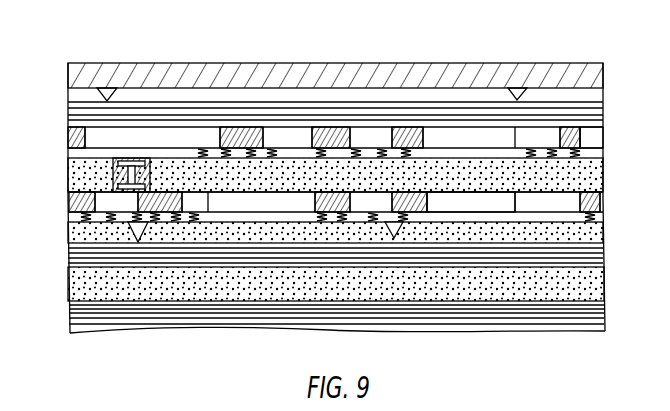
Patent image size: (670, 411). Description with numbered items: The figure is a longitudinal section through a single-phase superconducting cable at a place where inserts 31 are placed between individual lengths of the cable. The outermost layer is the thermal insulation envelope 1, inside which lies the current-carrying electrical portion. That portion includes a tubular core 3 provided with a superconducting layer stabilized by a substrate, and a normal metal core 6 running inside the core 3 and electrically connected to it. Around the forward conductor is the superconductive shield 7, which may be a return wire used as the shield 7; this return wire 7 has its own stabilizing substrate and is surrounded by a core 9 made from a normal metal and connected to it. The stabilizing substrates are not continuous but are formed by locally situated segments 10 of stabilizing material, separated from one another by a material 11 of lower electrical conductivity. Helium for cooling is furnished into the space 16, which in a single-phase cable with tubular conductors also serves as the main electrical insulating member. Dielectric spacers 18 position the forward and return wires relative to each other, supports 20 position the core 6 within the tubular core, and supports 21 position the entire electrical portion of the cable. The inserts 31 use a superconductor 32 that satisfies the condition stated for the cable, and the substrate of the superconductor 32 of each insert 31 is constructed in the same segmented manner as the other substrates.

The thermal insulation envelope 1 is at (92, 72).
The core 3 is at (218, 216).
The normal metal core 6 is at (192, 313).
The superconductive shield 7 is at (590, 135).
The core 9 is at (533, 116).
The segments 10 is at (362, 203).
The material of lower electrical conductivity 11 is at (421, 149).
The space 16 is at (588, 175).
The dielectric spacers 18 is at (112, 178).
The supports 20 is at (396, 228).
The supports 21 is at (109, 96).
The inserts 31 is at (270, 196).
The superconductor 32 is at (334, 211).